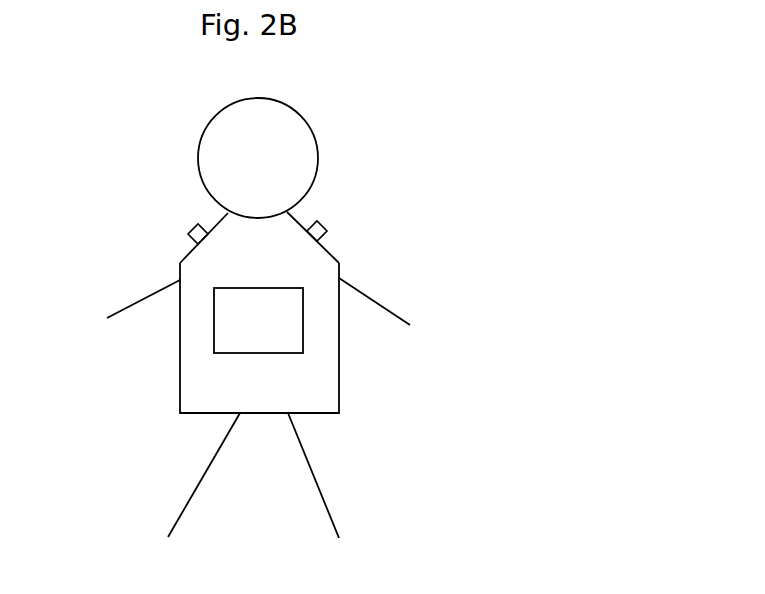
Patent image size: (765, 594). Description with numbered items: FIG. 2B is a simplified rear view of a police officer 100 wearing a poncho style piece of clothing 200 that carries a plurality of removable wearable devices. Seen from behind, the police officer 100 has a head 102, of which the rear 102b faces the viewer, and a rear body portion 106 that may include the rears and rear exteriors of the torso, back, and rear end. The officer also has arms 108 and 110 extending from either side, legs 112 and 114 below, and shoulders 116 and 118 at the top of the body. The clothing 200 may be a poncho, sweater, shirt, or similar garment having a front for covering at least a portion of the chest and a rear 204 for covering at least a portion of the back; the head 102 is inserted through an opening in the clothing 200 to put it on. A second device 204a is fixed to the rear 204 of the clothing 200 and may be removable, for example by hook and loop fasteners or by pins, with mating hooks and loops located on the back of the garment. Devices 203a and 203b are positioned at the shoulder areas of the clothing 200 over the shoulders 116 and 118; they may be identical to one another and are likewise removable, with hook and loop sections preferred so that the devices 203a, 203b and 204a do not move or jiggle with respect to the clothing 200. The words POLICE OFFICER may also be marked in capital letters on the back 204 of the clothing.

The police officer 100 is at (328, 148).
The head 102 is at (237, 115).
The rear of head 102b is at (207, 170).
The rear body portion 106 is at (198, 323).
The arm 108 is at (133, 303).
The arm 110 is at (395, 308).
The leg 112 is at (197, 487).
The leg 114 is at (328, 486).
The shoulder 116 is at (333, 252).
The shoulder 118 is at (185, 253).
The clothing 200 is at (345, 272).
The device 203a is at (320, 227).
The device 203b is at (197, 225).
The rear of clothing 204 is at (328, 328).
The second device 204a is at (258, 320).